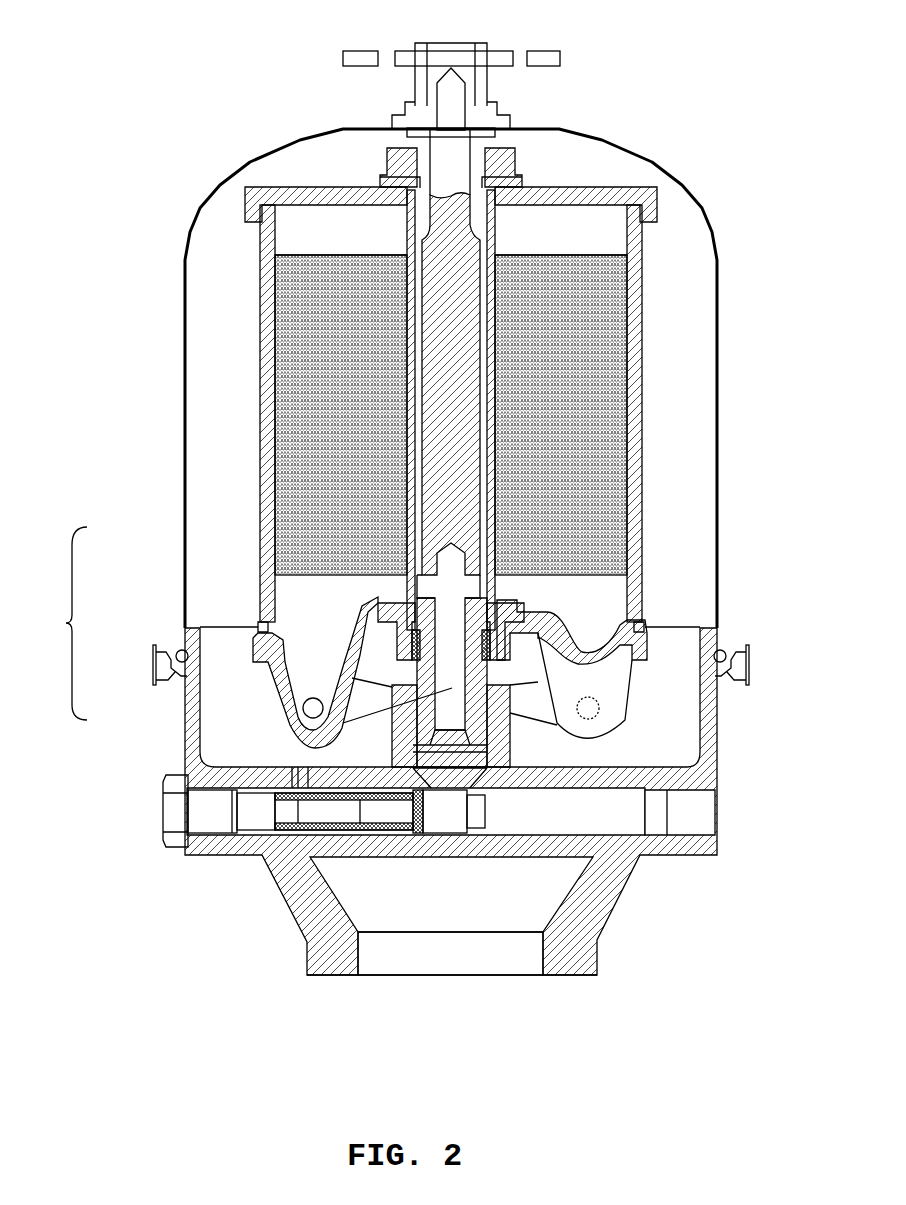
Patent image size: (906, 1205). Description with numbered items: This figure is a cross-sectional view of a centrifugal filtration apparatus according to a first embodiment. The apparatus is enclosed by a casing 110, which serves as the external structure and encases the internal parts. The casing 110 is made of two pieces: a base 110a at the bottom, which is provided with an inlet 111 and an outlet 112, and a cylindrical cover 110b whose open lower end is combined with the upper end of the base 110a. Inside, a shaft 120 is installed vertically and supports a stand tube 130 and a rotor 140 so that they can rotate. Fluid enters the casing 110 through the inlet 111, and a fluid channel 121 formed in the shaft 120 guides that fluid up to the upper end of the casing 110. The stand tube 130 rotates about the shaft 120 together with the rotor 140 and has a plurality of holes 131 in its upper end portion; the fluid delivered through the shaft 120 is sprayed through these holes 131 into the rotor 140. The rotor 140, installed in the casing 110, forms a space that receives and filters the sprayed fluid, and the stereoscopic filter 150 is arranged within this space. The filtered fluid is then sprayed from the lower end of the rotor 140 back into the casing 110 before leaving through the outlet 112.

The casing 110 is at (57, 623).
The base 110a is at (445, 833).
The cover 110b is at (185, 530).
The inlet 111 is at (600, 808).
The outlet 112 is at (445, 957).
The shaft 120 is at (450, 452).
The fluid channel 121 is at (388, 720).
The stand tube 130 is at (415, 383).
The holes 131 is at (407, 226).
The rotor 140 is at (265, 316).
The stereoscopic filter 150 is at (290, 262).